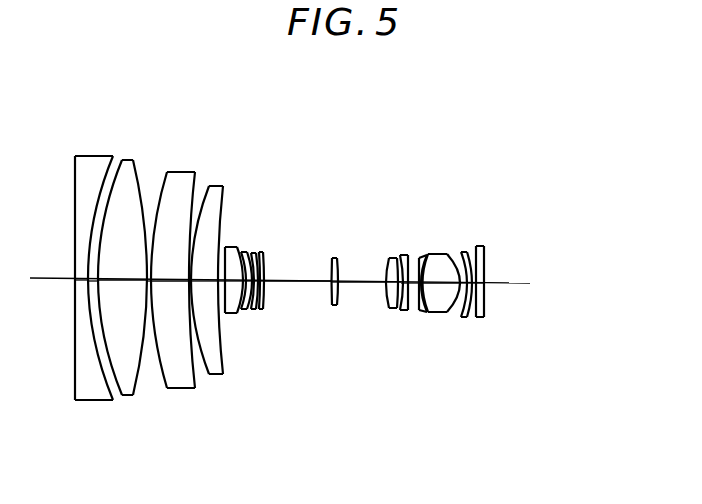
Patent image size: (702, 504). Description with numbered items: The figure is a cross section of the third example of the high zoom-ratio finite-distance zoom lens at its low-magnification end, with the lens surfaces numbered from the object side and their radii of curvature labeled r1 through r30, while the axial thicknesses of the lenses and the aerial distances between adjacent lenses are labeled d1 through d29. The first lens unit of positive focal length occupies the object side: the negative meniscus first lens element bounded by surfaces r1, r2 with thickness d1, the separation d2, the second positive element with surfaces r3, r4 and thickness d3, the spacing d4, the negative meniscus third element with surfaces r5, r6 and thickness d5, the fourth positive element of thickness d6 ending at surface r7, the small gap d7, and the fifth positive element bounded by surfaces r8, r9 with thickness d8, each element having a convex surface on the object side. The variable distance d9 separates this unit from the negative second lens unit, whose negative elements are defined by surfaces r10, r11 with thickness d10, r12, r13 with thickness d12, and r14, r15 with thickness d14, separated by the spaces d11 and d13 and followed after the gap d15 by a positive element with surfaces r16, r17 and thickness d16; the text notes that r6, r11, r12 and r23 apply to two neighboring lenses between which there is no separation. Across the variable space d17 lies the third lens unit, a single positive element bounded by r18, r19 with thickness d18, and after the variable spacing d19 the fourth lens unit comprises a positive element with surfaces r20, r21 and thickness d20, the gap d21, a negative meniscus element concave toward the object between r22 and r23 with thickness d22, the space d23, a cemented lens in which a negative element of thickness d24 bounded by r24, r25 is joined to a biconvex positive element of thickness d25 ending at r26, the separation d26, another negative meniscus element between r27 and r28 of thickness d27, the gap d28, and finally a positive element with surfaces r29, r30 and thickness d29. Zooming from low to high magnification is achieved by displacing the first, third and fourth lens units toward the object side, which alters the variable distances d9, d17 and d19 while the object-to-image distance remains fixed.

The radius of curvature of first lens surface r1 is at (75, 156).
The radius of curvature of second lens surface r2 is at (113, 156).
The radius of curvature of third lens surface r3 is at (122, 160).
The radius of curvature of fourth lens surface r4 is at (133, 160).
The radius of curvature of fifth lens surface r5 is at (167, 172).
The radius of curvature of sixth lens surface r6 is at (195, 172).
The radius of curvature of seventh lens surface r7 is at (209, 186).
The radius of curvature of eighth lens surface r8 is at (223, 186).
The radius of curvature of ninth lens surface r9 is at (225, 247).
The radius of curvature of tenth lens surface r10 is at (237, 247).
The radius of curvature of eleventh lens surface r11 is at (241, 252).
The radius of curvature of twelfth lens surface r12 is at (247, 252).
The radius of curvature of thirteenth lens surface r13 is at (251, 253).
The radius of curvature of fourteenth lens surface r14 is at (256, 253).
The radius of curvature of fifteenth lens surface r15 is at (259, 252).
The radius of curvature of sixteenth lens surface r16 is at (263, 252).
The radius of curvature of seventeenth lens surface r17 is at (332, 258).
The radius of curvature of eighteenth lens surface r18 is at (337, 258).
The radius of curvature of nineteenth lens surface r19 is at (389, 258).
The radius of curvature of twentieth lens surface r20 is at (397, 258).
The radius of curvature of twenty-first lens surface r21 is at (400, 255).
The radius of curvature of twenty-second lens surface r22 is at (408, 255).
The radius of curvature of twenty-third lens surface r23 is at (419, 258).
The radius of curvature of twenty-fourth lens surface r24 is at (427, 255).
The radius of curvature of twenty-fifth lens surface r25 is at (432, 254).
The radius of curvature of twenty-sixth lens surface r26 is at (449, 254).
The radius of curvature of twenty-seventh lens surface r27 is at (461, 252).
The radius of curvature of twenty-eighth lens surface r28 is at (467, 252).
The radius of curvature of twenty-ninth lens surface r29 is at (476, 246).
The radius of curvature of thirtieth lens surface r30 is at (484, 246).
The thickness of first lens element d1 is at (81, 283).
The aerial distance between first and second lens elements d2 is at (93, 283).
The thickness of second lens element d3 is at (123, 283).
The aerial distance between second and third lens elements d4 is at (149, 283).
The thickness of third lens element d5 is at (170, 283).
The thickness of fourth lens element d6 is at (190, 283).
The aerial distance between fourth and fifth lens elements d7 is at (205, 283).
The thickness of fifth lens element d8 is at (221, 283).
The aerial distance between first and second lens units d9 is at (234, 283).
The thickness of first negative lens element of second unit d10 is at (244, 283).
The aerial distance within second lens unit d11 is at (249, 283).
The thickness of second negative lens element of second unit d12 is at (253, 283).
The aerial distance within second lens unit d13 is at (256, 283).
The thickness of third negative lens element of second unit d14 is at (259, 283).
The aerial distance within second lens unit d15 is at (262, 283).
The thickness of positive lens element of second unit d16 is at (298, 283).
The aerial distance between second and third lens units d17 is at (335, 283).
The thickness of third lens unit element d18 is at (362, 283).
The aerial distance between third and fourth lens units d19 is at (392, 283).
The thickness of first positive lens element of fourth unit d20 is at (399, 283).
The aerial distance within fourth lens unit d21 is at (405, 283).
The thickness of negative meniscus lens element of fourth unit d22 is at (413, 283).
The aerial distance within fourth lens unit d23 is at (420, 283).
The thickness of negative element of cemented lens d24 is at (422, 283).
The thickness of biconvex positive element of cemented lens d25 is at (441, 283).
The aerial distance within fourth lens unit d26 is at (463, 283).
The thickness of second negative meniscus lens element of fourth unit d27 is at (469, 283).
The aerial distance within fourth lens unit d28 is at (474, 283).
The thickness of final positive lens element d29 is at (480, 283).